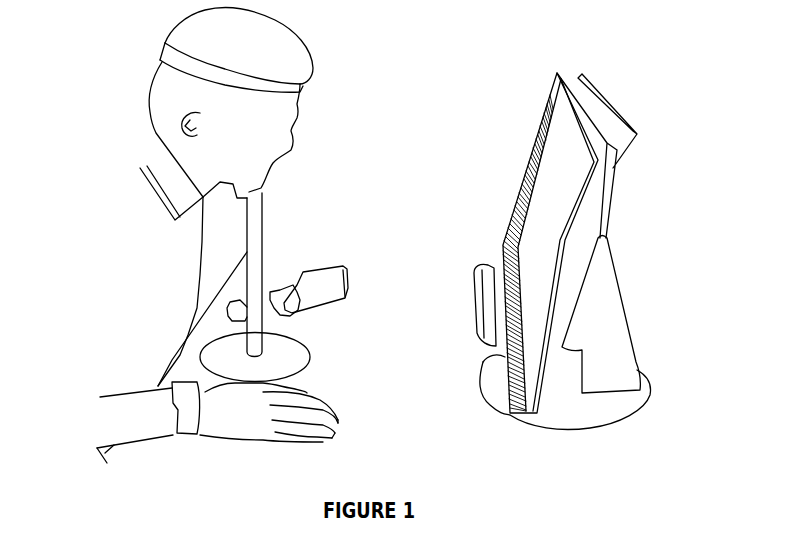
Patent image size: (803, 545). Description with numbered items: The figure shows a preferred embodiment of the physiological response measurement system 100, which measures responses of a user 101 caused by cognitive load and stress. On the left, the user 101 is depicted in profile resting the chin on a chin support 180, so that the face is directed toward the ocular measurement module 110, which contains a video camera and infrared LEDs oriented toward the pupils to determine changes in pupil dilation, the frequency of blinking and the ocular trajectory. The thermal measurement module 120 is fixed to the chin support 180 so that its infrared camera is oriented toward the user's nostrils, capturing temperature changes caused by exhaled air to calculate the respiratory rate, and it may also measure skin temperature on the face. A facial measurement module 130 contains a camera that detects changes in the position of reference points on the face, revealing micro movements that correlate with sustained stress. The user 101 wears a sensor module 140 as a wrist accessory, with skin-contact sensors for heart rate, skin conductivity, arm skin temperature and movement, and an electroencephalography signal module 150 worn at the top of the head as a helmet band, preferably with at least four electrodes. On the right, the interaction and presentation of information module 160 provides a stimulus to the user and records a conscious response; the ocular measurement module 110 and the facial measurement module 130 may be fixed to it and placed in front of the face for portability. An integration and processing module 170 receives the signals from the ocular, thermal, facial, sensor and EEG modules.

The physiological response measurement system 100 is at (587, 237).
The user 101 is at (184, 161).
The ocular measurement module 110 is at (489, 300).
The thermal measurement module 120 is at (312, 287).
The facial measurement module 130 is at (603, 106).
The sensor module 140 is at (177, 390).
The electroencephalography (EEG) signal module 150 is at (178, 55).
The interaction and presentation of information module 160 is at (576, 187).
The integration and processing module 170 is at (579, 269).
The chin support 180 is at (249, 323).